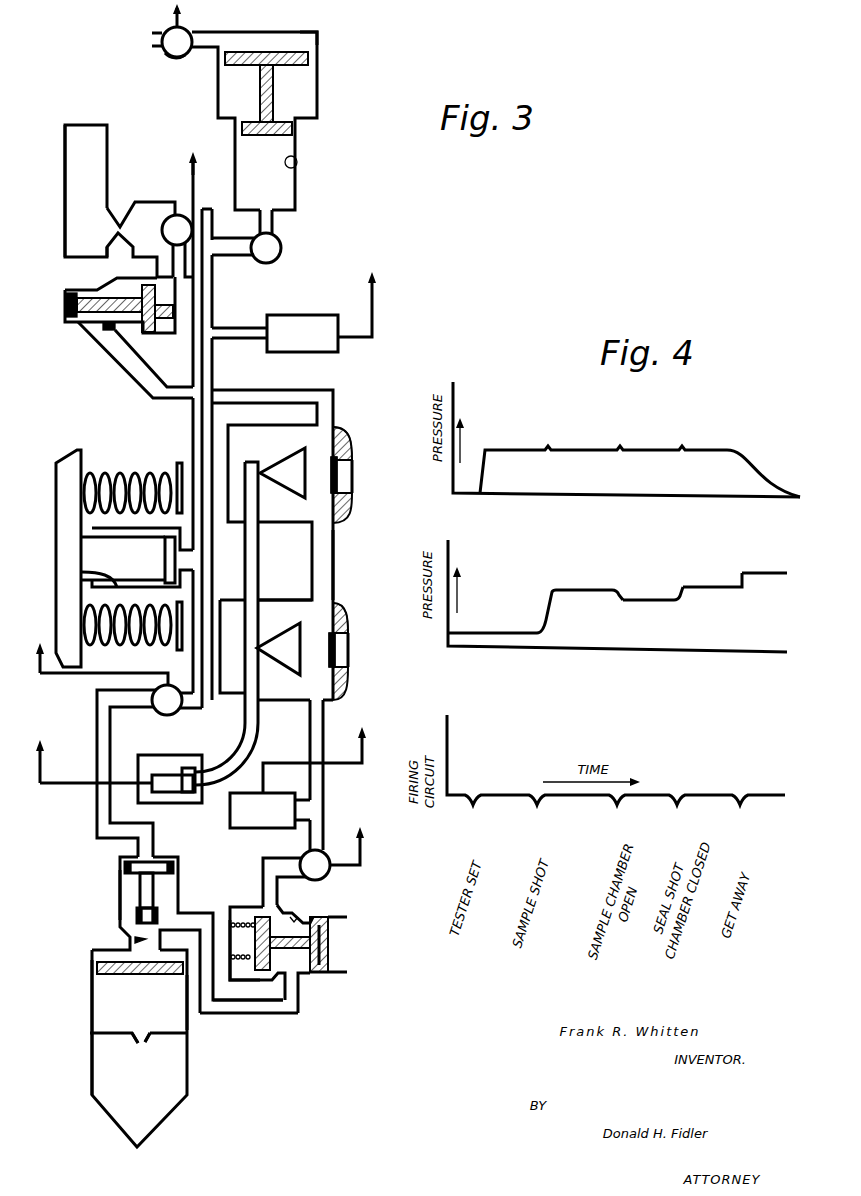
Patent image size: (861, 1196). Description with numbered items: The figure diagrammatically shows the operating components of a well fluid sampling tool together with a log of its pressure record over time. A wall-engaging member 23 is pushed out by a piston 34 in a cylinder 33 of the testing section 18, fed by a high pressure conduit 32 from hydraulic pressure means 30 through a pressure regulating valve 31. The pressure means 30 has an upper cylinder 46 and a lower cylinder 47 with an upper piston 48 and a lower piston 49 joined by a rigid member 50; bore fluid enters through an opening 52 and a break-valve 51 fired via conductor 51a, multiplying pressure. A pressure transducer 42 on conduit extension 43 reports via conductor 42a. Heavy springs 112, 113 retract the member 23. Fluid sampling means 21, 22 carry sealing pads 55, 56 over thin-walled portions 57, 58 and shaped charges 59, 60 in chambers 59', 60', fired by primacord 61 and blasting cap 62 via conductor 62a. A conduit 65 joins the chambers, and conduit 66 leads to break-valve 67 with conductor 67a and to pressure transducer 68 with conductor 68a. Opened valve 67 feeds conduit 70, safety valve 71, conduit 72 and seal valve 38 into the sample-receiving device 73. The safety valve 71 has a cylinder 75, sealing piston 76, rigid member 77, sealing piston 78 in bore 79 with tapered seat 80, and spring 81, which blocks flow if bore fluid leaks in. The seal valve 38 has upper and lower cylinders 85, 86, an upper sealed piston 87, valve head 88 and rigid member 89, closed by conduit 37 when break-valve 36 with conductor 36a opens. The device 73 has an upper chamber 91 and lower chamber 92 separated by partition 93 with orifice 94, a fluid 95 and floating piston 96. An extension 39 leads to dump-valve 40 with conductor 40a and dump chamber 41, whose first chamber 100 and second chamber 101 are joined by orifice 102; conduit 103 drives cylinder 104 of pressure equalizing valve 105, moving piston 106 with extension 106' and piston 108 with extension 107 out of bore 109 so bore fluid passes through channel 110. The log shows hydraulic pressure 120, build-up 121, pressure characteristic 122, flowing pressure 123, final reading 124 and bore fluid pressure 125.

In FIG. 3, the testing section 18 is at (340, 540).
In FIG. 3, the fluid sampling means 21 is at (348, 422).
In FIG. 3, the fluid sampling means 22 is at (353, 607).
In FIG. 3, the wall-engaging member 23 is at (63, 503).
In FIG. 3, the hydraulic pressure means 30 is at (322, 93).
In FIG. 3, the pressure regulating valve 31 is at (281, 242).
In FIG. 3, the high pressure conduit 32 is at (213, 266).
In FIG. 3, the cylinder 33 is at (82, 572).
In FIG. 3, the piston 34 is at (82, 548).
In FIG. 3, the break-valve 36 is at (160, 716).
In FIG. 3, the conductor 36a is at (40, 643).
In FIG. 3, the conduit 37 is at (97, 703).
In FIG. 3, the seal valve 38 is at (112, 903).
In FIG. 3, the extension 39 is at (194, 213).
In FIG. 3, the dump-valve 40 is at (185, 217).
In FIG. 3, the conductor 40a is at (190, 172).
In FIG. 3, the dump chamber 41 is at (60, 183).
In FIG. 3, the pressure transducer 42 is at (322, 315).
In FIG. 3, the conductor 42a is at (373, 293).
In FIG. 3, the conduit extension 43 is at (250, 341).
In FIG. 3, the upper cylinder 46 is at (310, 33).
In FIG. 3, the lower cylinder 47 is at (298, 167).
In FIG. 3, the upper piston 48 is at (310, 58).
In FIG. 3, the lower piston 49 is at (293, 134).
In FIG. 3, the rigid member 50 is at (275, 85).
In FIG. 3, the break-valve 51 is at (170, 53).
In FIG. 3, the conductor 51a is at (181, 14).
In FIG. 3, the opening 52 is at (155, 33).
In FIG. 3, the sealing pad 55 is at (347, 433).
In FIG. 3, the sealing pad 56 is at (349, 622).
In FIG. 3, the thin-walled portion 57 is at (353, 472).
In FIG. 3, the thin-walled portion 58 is at (349, 655).
In FIG. 3, the shaped charge explosive means 59 is at (282, 465).
In FIG. 3, the chamber 59' is at (285, 561).
In FIG. 3, the shaped charge explosive means 60 is at (278, 659).
In FIG. 3, the chamber 60' is at (285, 580).
In FIG. 3, the primacord 61 is at (243, 558).
In FIG. 3, the blasting cap 62 is at (170, 777).
In FIG. 3, the conductor 62a is at (43, 787).
In FIG. 3, the conduit 65 is at (335, 558).
In FIG. 3, the conduit 66 is at (308, 727).
In FIG. 3, the break-valve 67 is at (326, 855).
In FIG. 3, the conductor 67a is at (362, 850).
In FIG. 3, the pressure transducer 68 is at (230, 818).
In FIG. 3, the conductor 68a is at (365, 742).
In FIG. 3, the conduit 70 is at (263, 873).
In FIG. 3, the safety valve 71 is at (316, 988).
In FIG. 3, the conduit 72 is at (263, 1016).
In FIG. 3, the sample-receiving device 73 is at (84, 1020).
In FIG. 3, the cylinder 75 is at (293, 917).
In FIG. 3, the sealing piston 76 is at (252, 912).
In FIG. 3, the rigid member 77 is at (300, 935).
In FIG. 3, the sealing piston 78 is at (330, 927).
In FIG. 3, the bore 79 is at (335, 968).
In FIG. 3, the tapered seat 80 is at (330, 947).
In FIG. 3, the spring 81 is at (243, 963).
In FIG. 3, the upper cylinder 85 is at (124, 897).
In FIG. 3, the lower cylinder 86 is at (136, 939).
In FIG. 3, the upper sealed piston 87 is at (175, 867).
In FIG. 3, the valve head 88 is at (157, 917).
In FIG. 3, the rigid member 89 is at (153, 887).
In FIG. 3, the upper chamber 91 is at (90, 1013).
In FIG. 3, the lower chamber 92 is at (90, 1080).
In FIG. 3, the partition 93 is at (115, 1036).
In FIG. 3, the flow restricting orifice 94 is at (153, 1038).
In FIG. 3, the fluid 95 is at (135, 997).
In FIG. 3, the floating piston 96 is at (100, 963).
In FIG. 3, the first chamber 100 is at (135, 237).
In FIG. 3, the second chamber 101 is at (75, 233).
In FIG. 3, the flow restricting orifice 102 is at (120, 223).
In FIG. 3, the conduit 103 is at (155, 270).
In FIG. 3, the cylinder 104 is at (163, 333).
In FIG. 3, the pressure equalizing valve 105 is at (70, 330).
In FIG. 3, the piston 106 is at (88, 346).
In FIG. 3, the extension 106' is at (207, 301).
In FIG. 3, the extension 107 is at (100, 293).
In FIG. 3, the piston 108 is at (73, 298).
In FIG. 3, the bore 109 is at (65, 308).
In FIG. 3, the channel 110 is at (118, 367).
In FIG. 3, the spring 112 is at (133, 477).
In FIG. 3, the spring 113 is at (97, 647).
In FIG. 4, the hydraulic pressure indication 120 is at (520, 450).
In FIG. 4, the build-up pressure indication 121 is at (540, 610).
In FIG. 4, the pressure characteristic 122 is at (580, 588).
In FIG. 4, the flowing pressure indication 123 is at (643, 598).
In FIG. 4, the final pressure reading 124 is at (700, 587).
In FIG. 4, the bore fluid pressure indication 125 is at (765, 572).